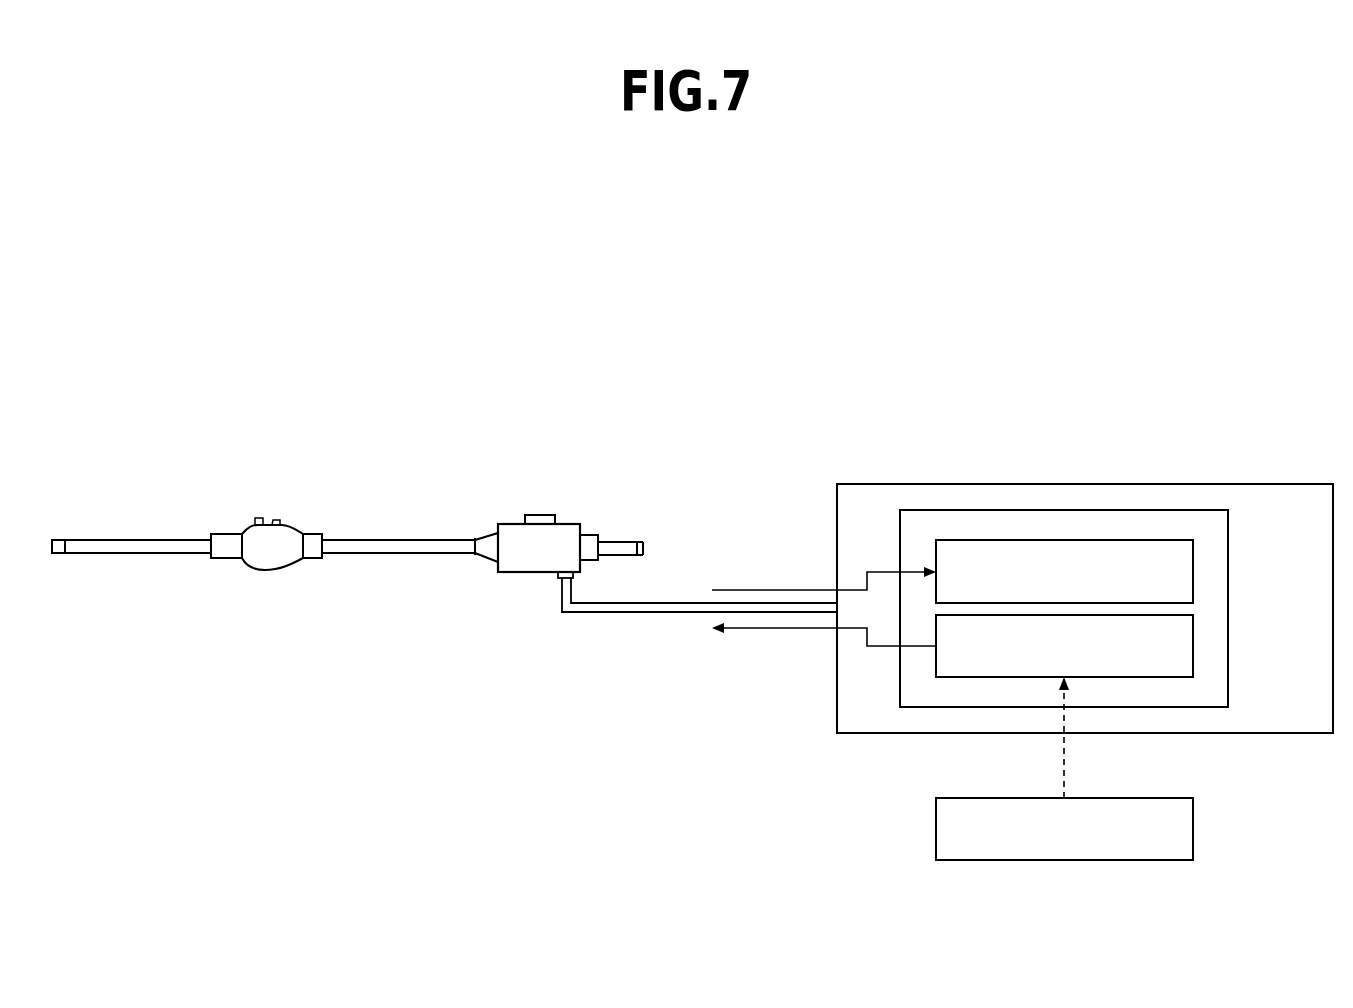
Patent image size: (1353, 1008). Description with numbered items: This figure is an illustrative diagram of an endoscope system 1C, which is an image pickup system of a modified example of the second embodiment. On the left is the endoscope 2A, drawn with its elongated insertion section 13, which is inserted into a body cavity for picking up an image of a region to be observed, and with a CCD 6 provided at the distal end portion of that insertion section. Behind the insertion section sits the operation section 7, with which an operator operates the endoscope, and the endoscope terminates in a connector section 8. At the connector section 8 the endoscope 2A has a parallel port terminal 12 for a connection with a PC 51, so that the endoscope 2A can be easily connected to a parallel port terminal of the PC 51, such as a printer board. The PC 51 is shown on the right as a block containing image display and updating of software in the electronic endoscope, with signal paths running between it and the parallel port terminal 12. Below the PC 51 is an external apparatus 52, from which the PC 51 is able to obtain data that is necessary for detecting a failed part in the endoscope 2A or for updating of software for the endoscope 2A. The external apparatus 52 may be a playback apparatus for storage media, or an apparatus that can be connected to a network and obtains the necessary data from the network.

The endoscope 2A is at (643, 347).
The CCD 6 is at (55, 560).
The insertion section 13 is at (165, 555).
The operation section 7 is at (246, 525).
The connector section 8 is at (506, 482).
The parallel port terminal 12 is at (558, 580).
The endoscope system 1C is at (1067, 357).
The PC 51 is at (1113, 484).
The external apparatus 52 is at (1156, 798).